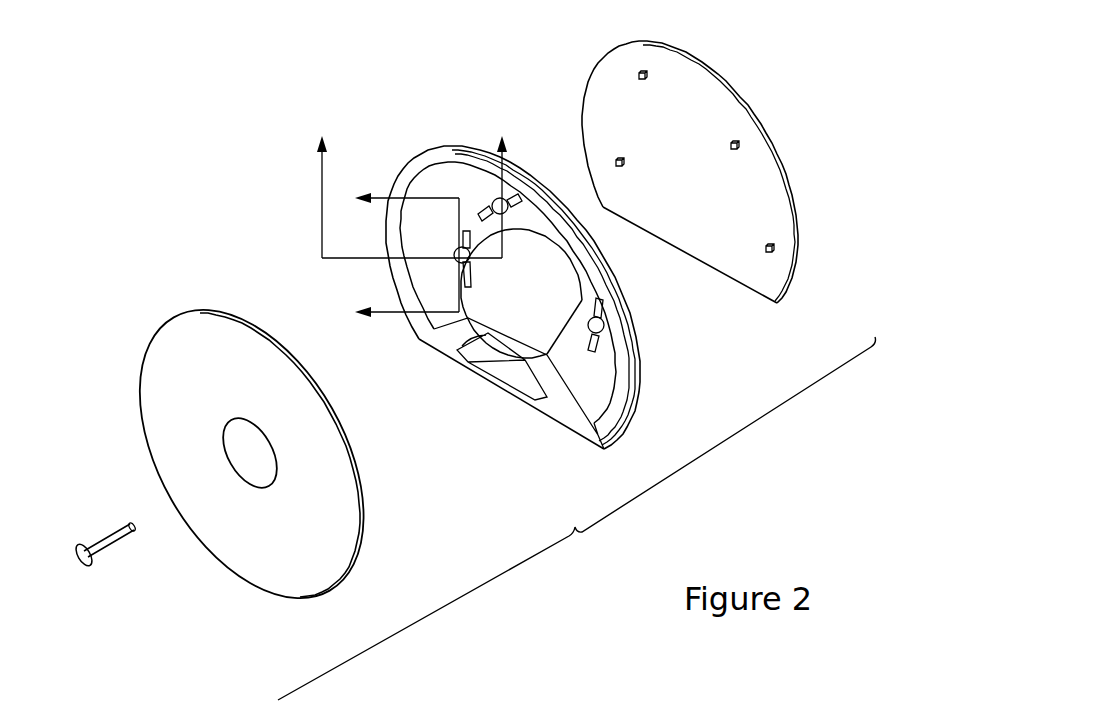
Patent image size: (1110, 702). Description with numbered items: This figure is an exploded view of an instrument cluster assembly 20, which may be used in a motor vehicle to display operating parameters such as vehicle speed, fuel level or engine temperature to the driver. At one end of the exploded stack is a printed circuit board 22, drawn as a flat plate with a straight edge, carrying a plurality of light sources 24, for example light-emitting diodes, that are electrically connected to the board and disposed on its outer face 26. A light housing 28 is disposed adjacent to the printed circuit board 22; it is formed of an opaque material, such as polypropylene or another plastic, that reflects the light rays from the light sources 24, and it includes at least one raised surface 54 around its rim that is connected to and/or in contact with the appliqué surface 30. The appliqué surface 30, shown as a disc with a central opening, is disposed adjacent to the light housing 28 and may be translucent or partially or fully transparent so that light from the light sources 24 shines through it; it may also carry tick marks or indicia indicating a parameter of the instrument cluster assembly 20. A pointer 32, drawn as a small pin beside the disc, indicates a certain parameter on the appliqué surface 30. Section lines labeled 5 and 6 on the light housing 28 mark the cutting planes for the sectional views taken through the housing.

The instrument cluster assembly 20 is at (577, 518).
The printed circuit board 22 is at (711, 172).
The light sources 24 is at (644, 81).
The outer face 26 is at (663, 222).
The light housing 28 is at (531, 265).
The appliqué surface 30 is at (157, 332).
The pointer 32 is at (113, 548).
The raised surface 54 is at (624, 380).
The section line 5- 5 is at (397, 256).
The section line 6- 6 is at (411, 183).